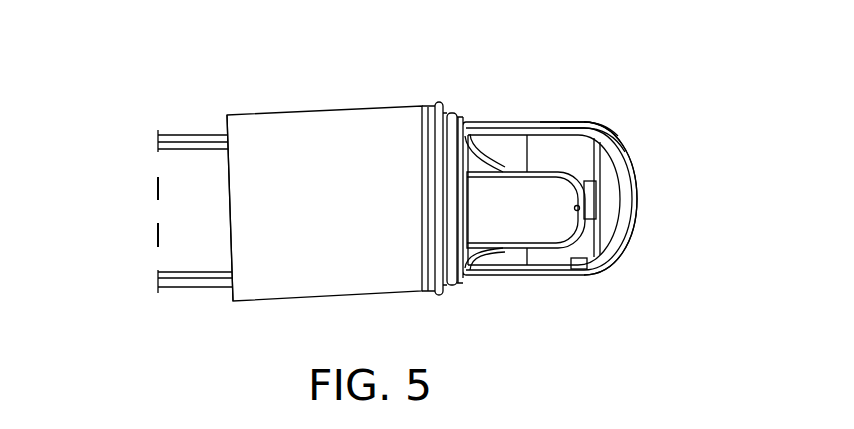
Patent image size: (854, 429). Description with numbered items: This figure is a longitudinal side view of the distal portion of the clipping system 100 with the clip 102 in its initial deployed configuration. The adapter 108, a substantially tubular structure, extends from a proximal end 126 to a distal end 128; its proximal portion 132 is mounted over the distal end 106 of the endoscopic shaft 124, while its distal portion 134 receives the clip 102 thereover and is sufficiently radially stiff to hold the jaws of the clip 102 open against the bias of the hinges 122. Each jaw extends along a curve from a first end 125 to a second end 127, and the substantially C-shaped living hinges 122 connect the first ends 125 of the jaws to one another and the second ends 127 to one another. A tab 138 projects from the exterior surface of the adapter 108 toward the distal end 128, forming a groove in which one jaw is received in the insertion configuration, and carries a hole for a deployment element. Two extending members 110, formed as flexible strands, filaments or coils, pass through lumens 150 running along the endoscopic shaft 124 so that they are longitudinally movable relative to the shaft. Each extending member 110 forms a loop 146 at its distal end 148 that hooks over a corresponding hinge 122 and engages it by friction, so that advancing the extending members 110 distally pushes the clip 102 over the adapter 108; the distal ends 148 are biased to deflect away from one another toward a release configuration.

The clipping system 100 is at (195, 87).
The clip 102 is at (633, 200).
The distal end 106 is at (203, 175).
The adapter 108 is at (370, 97).
The extending members 110 is at (485, 120).
The hinges 122 is at (540, 122).
The endoscopic shaft 124 is at (170, 250).
The first end 125 is at (602, 134).
The proximal end 126 is at (237, 217).
The second end 127 is at (590, 265).
The distal end 128 is at (592, 167).
The proximal portion 132 is at (314, 127).
The distal portion 134 is at (517, 260).
The tab 138 is at (580, 208).
The loop 146 is at (585, 123).
The distal end 148 is at (562, 120).
The lumen 150 is at (165, 140).